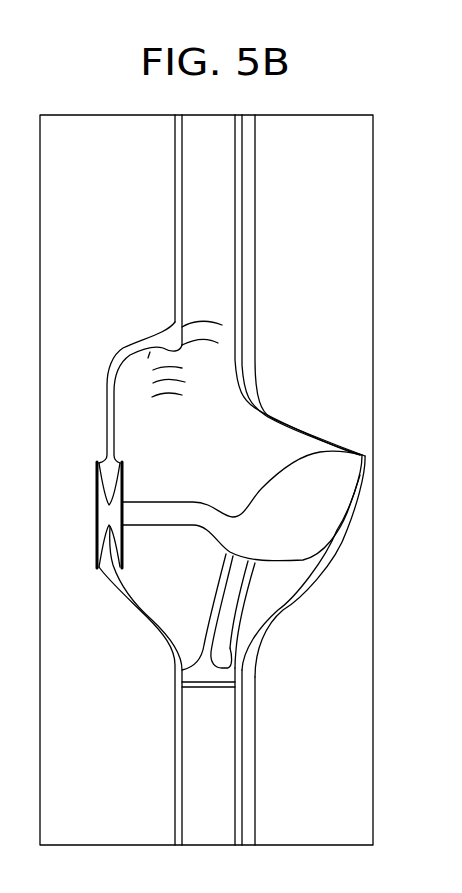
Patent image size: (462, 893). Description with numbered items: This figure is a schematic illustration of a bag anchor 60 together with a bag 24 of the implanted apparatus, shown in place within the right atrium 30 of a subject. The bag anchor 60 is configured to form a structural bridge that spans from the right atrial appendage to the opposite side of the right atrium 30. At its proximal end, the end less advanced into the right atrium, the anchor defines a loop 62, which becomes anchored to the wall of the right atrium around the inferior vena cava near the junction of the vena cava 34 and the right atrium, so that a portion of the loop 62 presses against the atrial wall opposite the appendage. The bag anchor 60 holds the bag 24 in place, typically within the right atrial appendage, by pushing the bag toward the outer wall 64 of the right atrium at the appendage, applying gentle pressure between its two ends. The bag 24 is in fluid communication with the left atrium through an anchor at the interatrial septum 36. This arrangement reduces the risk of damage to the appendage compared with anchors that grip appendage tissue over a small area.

The bag 24 is at (332, 490).
The right atrium 30 is at (205, 479).
The vena cava 34 is at (240, 716).
The interatrial septum 36 is at (113, 452).
The bag anchor 60 is at (258, 573).
The loop 62 is at (213, 688).
The outer wall 64 is at (365, 456).